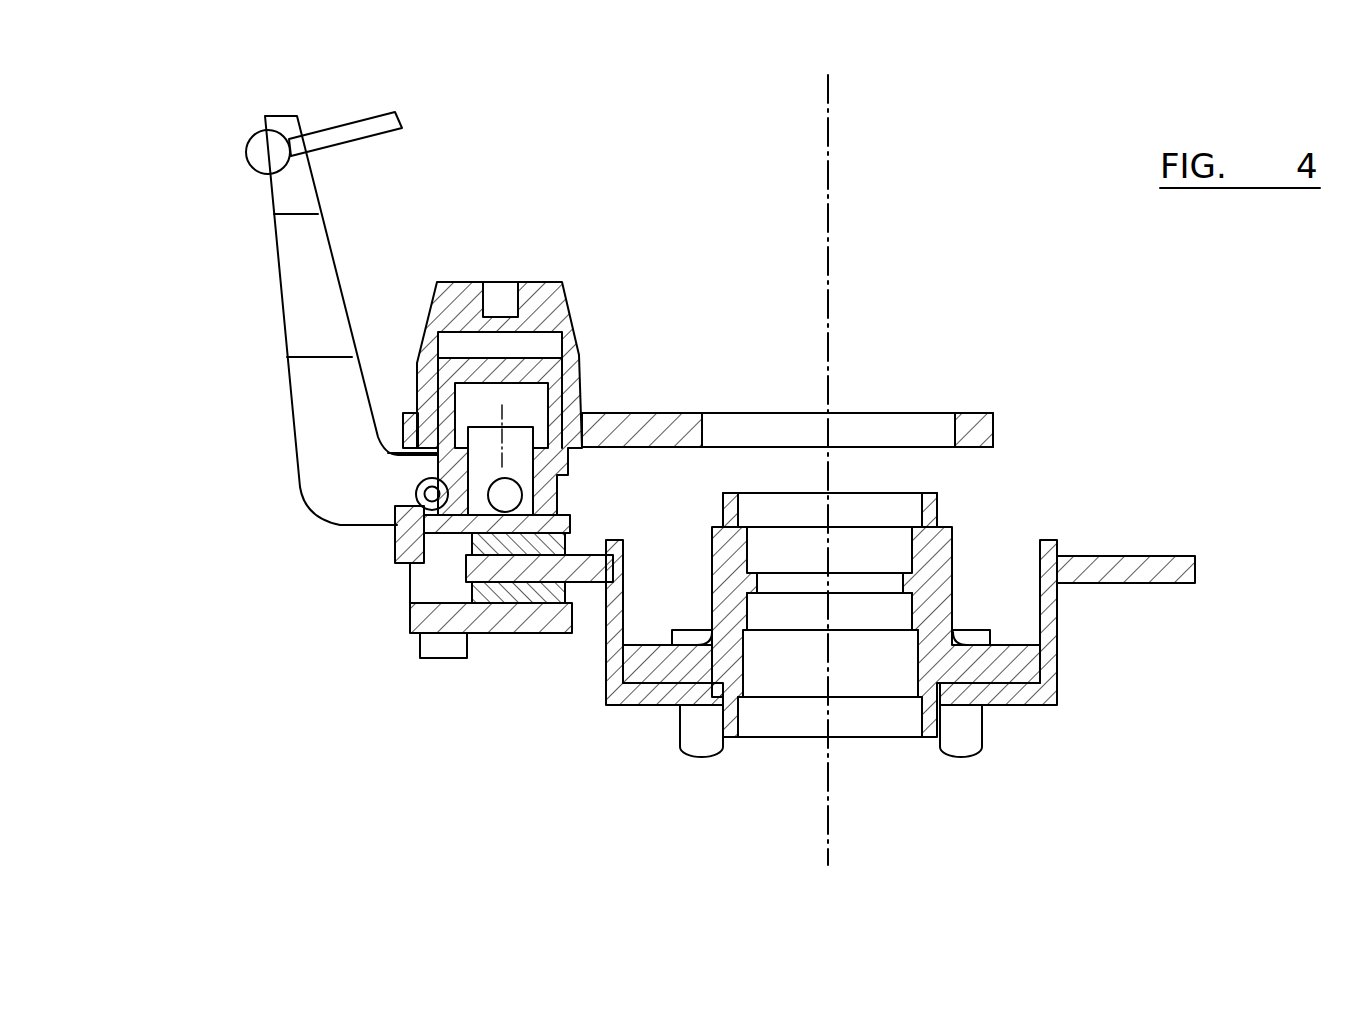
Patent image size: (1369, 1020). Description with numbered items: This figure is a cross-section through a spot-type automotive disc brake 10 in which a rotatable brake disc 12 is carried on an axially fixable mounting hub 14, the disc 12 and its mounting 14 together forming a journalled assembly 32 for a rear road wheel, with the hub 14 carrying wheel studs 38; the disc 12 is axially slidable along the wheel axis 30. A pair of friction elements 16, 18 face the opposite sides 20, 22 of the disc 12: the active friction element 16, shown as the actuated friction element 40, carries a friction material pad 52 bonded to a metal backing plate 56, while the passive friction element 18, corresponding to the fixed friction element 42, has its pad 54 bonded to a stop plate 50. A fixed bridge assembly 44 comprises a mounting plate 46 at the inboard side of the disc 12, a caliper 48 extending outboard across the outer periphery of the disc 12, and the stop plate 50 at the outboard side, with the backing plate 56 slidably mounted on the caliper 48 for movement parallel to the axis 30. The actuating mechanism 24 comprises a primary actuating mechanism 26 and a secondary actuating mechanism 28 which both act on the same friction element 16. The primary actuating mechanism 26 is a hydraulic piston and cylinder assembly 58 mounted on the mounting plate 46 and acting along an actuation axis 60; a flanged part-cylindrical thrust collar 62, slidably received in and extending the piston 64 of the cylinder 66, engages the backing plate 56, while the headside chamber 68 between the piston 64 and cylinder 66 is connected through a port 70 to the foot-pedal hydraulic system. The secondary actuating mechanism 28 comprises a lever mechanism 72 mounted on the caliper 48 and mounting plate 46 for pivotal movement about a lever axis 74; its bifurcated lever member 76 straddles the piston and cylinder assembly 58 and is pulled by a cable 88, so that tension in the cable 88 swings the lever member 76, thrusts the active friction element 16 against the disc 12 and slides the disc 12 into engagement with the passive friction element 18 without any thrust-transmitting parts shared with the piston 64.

The disc brake 10 is at (1046, 406).
The brake disc 12 is at (1194, 583).
The mounting hub 14 is at (1058, 705).
The friction element 16 is at (573, 533).
The friction element 18 is at (432, 582).
The side of disc 20 is at (1142, 556).
The side of disc 22 is at (1137, 583).
The actuating mechanism 24 is at (275, 385).
The primary actuating mechanism 26 is at (420, 312).
The secondary actuating mechanism 28 is at (355, 452).
The axis 30 is at (832, 287).
The journalled assembly 32 is at (912, 750).
The wheel studs 38 is at (962, 735).
The actuated friction element 40 is at (568, 540).
The fixed friction element 42 is at (537, 593).
The fixed bridge assembly 44 is at (405, 591).
The mounting plate 46 is at (580, 528).
The caliper 48 is at (405, 603).
The stop plate 50 is at (515, 618).
The friction material pad 52 is at (560, 523).
The friction material pad 54 is at (495, 605).
The backing plate 56 is at (407, 533).
The hydraulic piston and cylinder assembly 58 is at (574, 303).
The actuation axis 60 is at (495, 427).
The thrust collar 62 is at (525, 480).
The piston 64 is at (467, 365).
The cylinder 66 is at (423, 372).
The headside chamber 68 is at (483, 347).
The port 70 is at (503, 292).
The lever mechanism 72 is at (312, 517).
The lever axis 74 is at (417, 492).
The bifurcated lever member 76 is at (290, 234).
The cable 88 is at (337, 130).